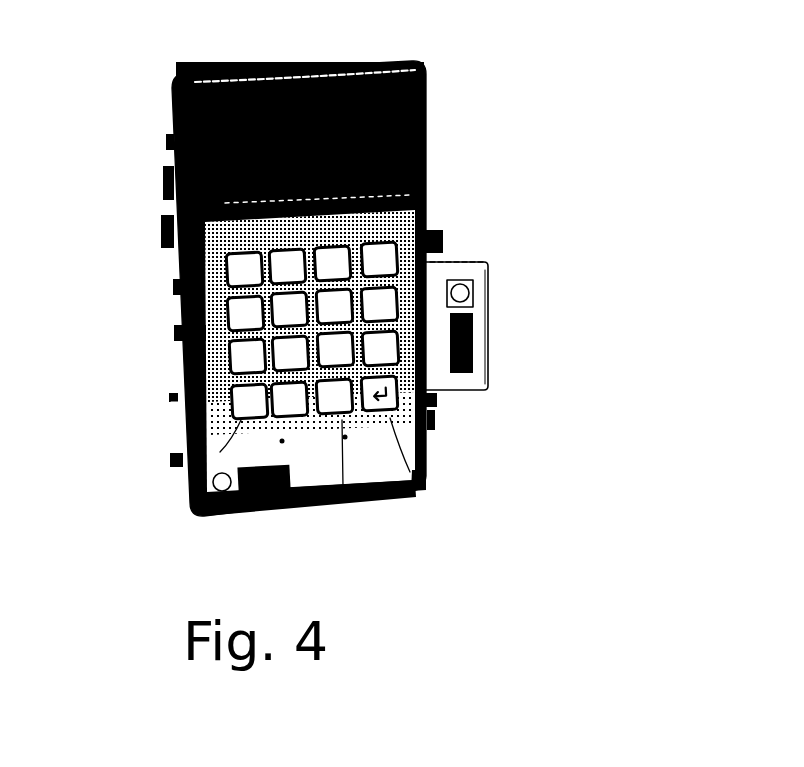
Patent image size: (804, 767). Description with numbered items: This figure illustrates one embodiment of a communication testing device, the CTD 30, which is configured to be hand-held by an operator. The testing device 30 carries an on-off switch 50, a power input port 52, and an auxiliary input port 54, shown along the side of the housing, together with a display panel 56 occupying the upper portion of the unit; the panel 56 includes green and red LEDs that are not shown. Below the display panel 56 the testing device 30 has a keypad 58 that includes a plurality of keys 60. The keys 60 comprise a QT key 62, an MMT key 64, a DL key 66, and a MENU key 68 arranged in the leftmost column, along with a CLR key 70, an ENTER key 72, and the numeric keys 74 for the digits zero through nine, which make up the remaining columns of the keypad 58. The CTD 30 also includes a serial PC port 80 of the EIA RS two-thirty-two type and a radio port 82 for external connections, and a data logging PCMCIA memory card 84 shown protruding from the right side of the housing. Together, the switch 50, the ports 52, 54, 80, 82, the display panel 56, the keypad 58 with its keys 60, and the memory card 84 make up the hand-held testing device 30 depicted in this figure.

The communication testing device (CTD) 30 is at (527, 105).
The on-off switch 50 is at (160, 232).
The power input port 52 is at (168, 178).
The auxiliary input port 54 is at (167, 140).
The display panel 56 is at (428, 127).
The keypad 58 is at (173, 367).
The keys 60 is at (423, 213).
The QT key 62 is at (173, 288).
The MMT key 64 is at (173, 333).
The DL key 66 is at (170, 402).
The MENU key 68 is at (182, 477).
The CLR key 70 is at (350, 508).
The ENTER key 72 is at (425, 487).
The numeric keys 74 is at (428, 180).
The EIA RS 232 PC port 80 is at (161, 441).
The radio port 82 is at (449, 423).
The data logging PCMCIA memory card 84 is at (500, 330).